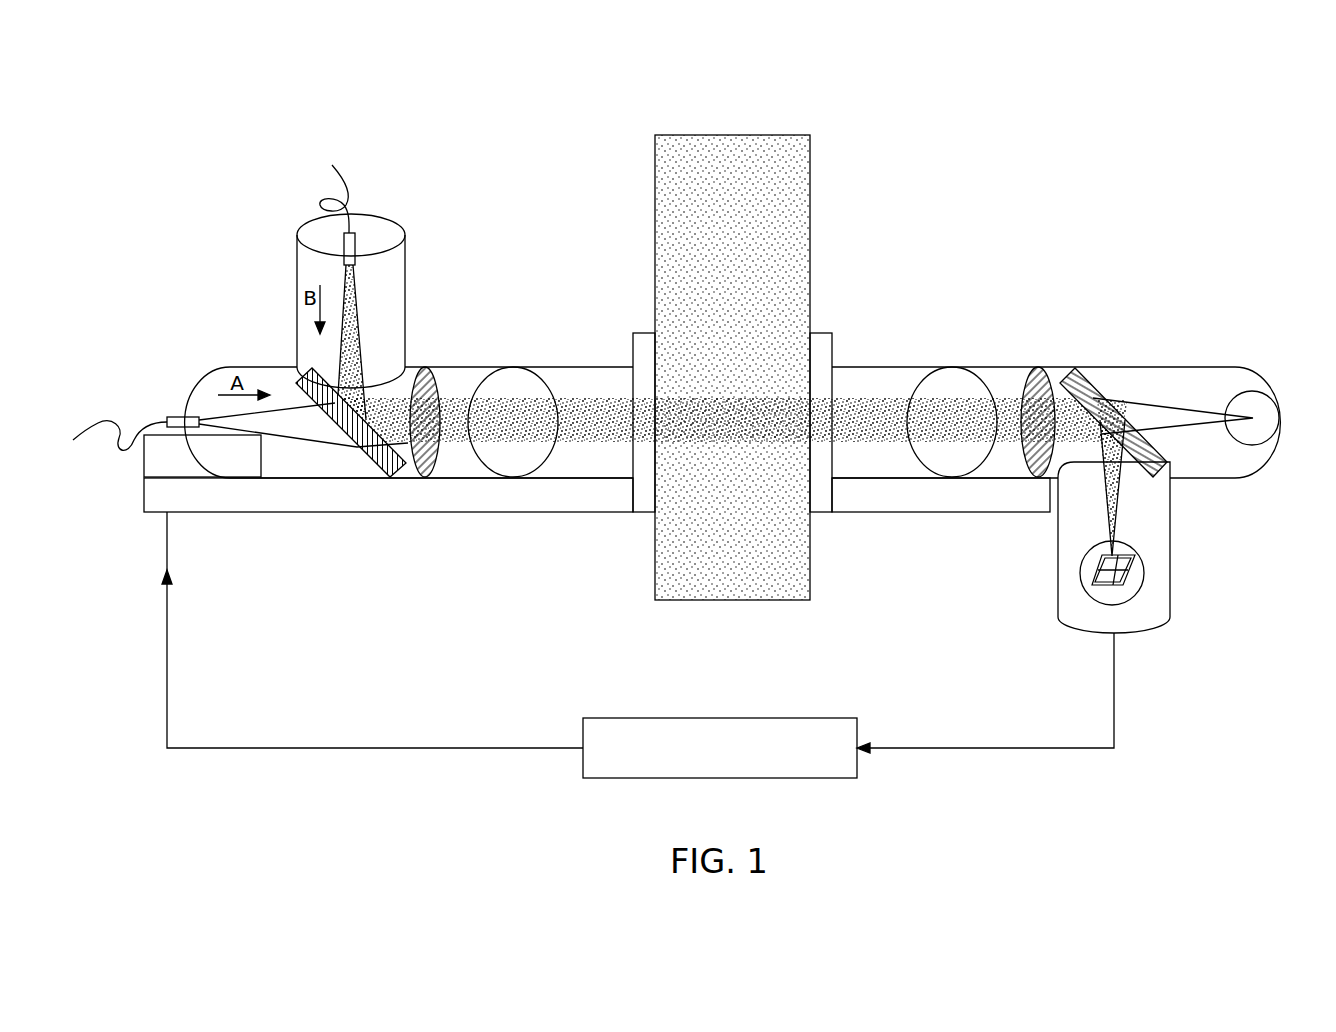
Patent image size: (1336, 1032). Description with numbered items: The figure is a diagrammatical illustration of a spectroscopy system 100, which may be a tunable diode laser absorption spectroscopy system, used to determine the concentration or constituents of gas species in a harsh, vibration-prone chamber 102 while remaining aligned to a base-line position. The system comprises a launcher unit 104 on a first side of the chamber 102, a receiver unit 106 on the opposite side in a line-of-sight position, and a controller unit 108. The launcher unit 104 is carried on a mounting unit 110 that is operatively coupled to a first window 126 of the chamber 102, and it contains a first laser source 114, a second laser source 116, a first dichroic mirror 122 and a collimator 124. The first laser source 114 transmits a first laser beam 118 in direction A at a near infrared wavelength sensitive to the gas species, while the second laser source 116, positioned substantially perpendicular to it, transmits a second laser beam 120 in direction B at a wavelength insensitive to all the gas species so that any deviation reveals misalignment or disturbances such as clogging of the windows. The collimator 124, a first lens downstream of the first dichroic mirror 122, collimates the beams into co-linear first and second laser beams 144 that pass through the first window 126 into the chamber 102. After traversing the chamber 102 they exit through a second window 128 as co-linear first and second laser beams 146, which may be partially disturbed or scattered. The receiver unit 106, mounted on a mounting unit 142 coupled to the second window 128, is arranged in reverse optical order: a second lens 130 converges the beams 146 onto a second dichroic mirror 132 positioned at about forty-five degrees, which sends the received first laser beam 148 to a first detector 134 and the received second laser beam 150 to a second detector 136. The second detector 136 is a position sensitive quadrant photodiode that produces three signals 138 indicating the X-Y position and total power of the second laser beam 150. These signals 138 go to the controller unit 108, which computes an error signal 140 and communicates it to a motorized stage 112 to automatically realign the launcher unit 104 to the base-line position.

The spectroscopy system 100 is at (1182, 135).
The chamber 102 is at (798, 135).
The launcher unit 104 is at (383, 225).
The receiver unit 106 is at (1267, 465).
The controller unit 108 is at (732, 718).
The mounting unit 110 is at (523, 512).
The motorized stage 112 is at (144, 462).
The first laser source 114 is at (175, 417).
The second laser source 116 is at (343, 247).
The first laser beam 118 is at (330, 437).
The second laser beam 120 is at (357, 307).
The first dichroic mirror 122 is at (400, 472).
The collimator 124 is at (432, 373).
The first window 126 is at (643, 333).
The second window 128 is at (822, 333).
The second lens 130 is at (1033, 477).
The second dichroic mirror 132 is at (1083, 365).
The first detector 134 is at (1273, 407).
The second detector 136 is at (1148, 573).
The signals 138 is at (1114, 710).
The error signal 140 is at (375, 748).
The mounting unit 142 is at (942, 512).
The co-linear first and second laser beams 144 is at (590, 398).
The co-linear first and second laser beams 146 is at (845, 443).
The first laser beam received by the receiver unit 148 is at (1140, 405).
The second laser beam received at the receiver unit 150 is at (1123, 508).